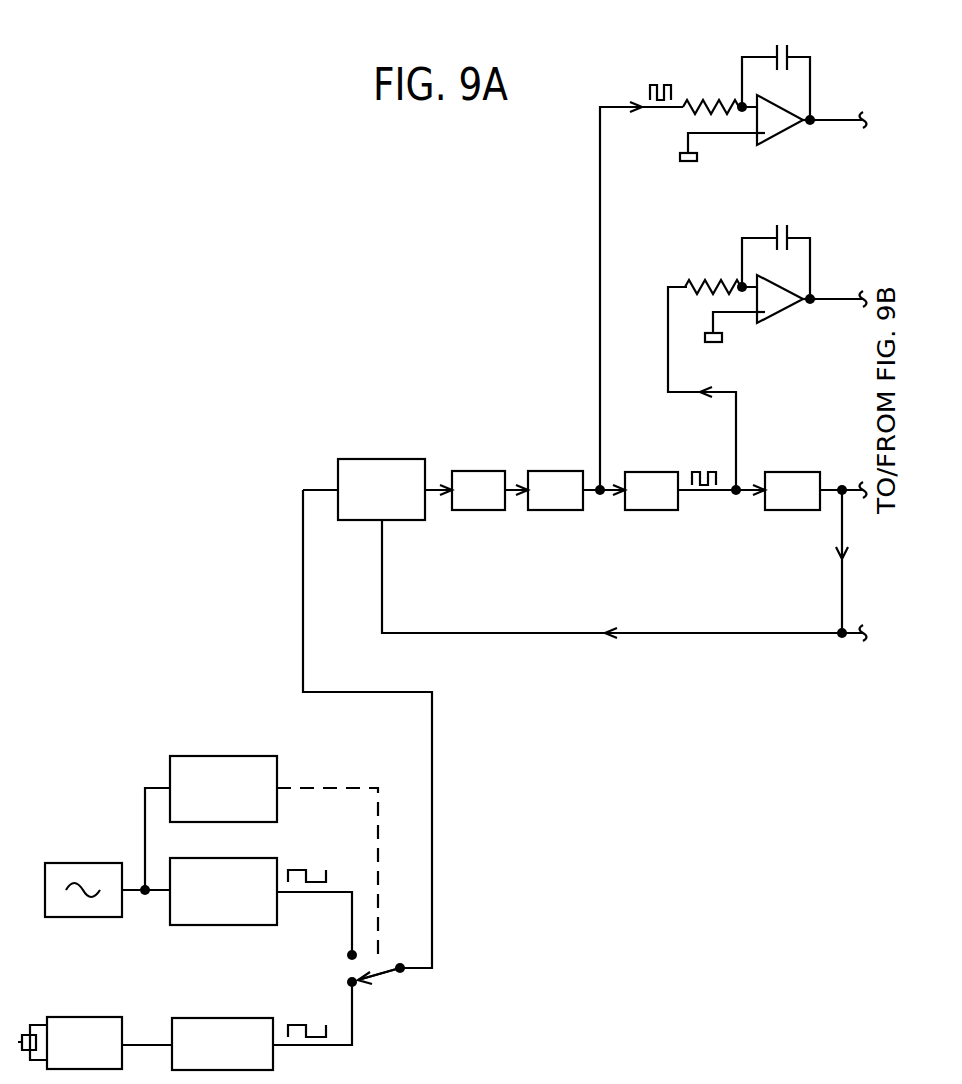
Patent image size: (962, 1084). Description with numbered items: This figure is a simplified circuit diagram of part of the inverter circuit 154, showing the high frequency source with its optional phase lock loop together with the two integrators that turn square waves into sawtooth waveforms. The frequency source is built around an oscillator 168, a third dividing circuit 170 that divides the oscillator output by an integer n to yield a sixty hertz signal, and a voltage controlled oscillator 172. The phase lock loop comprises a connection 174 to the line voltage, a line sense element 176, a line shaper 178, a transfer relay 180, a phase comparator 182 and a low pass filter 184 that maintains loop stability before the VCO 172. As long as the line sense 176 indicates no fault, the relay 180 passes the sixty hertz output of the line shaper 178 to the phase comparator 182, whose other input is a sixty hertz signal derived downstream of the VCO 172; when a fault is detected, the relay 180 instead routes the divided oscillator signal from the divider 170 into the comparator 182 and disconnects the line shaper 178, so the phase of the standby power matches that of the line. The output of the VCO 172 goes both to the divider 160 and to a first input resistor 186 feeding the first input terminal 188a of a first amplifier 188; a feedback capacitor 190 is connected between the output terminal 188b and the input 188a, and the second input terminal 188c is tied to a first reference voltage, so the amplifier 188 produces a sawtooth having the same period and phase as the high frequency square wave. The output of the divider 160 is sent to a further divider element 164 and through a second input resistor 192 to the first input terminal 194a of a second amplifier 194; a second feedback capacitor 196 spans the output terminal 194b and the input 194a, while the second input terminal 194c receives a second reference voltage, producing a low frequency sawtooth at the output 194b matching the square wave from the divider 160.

The inverter circuit 154 is at (513, 223).
The divider 160 is at (651, 472).
The divider element 164 is at (789, 472).
The oscillator 168 is at (92, 1022).
The third dividing circuit 170 is at (205, 1022).
The voltage controlled oscillator 172 is at (568, 471).
The connection to the line voltage 174 is at (90, 873).
The line sense element 176 is at (213, 762).
The line shaper 178 is at (262, 868).
The transfer relay 180 is at (380, 960).
The phase comparator 182 is at (355, 460).
The low pass filter 184 is at (475, 471).
The first input resistor 186 is at (698, 100).
The first amplifier 188 is at (779, 130).
The first input terminal 188a is at (742, 105).
The output terminal 188b is at (806, 124).
The second input terminal 188c is at (760, 143).
The feedback capacitor 190 is at (790, 50).
The second input resistor 192 is at (700, 282).
The second amplifier 194 is at (779, 310).
The first input terminal 194a is at (742, 285).
The output terminal 194b is at (806, 303).
The second input terminal 194c is at (760, 322).
The second feedback capacitor 196 is at (780, 228).